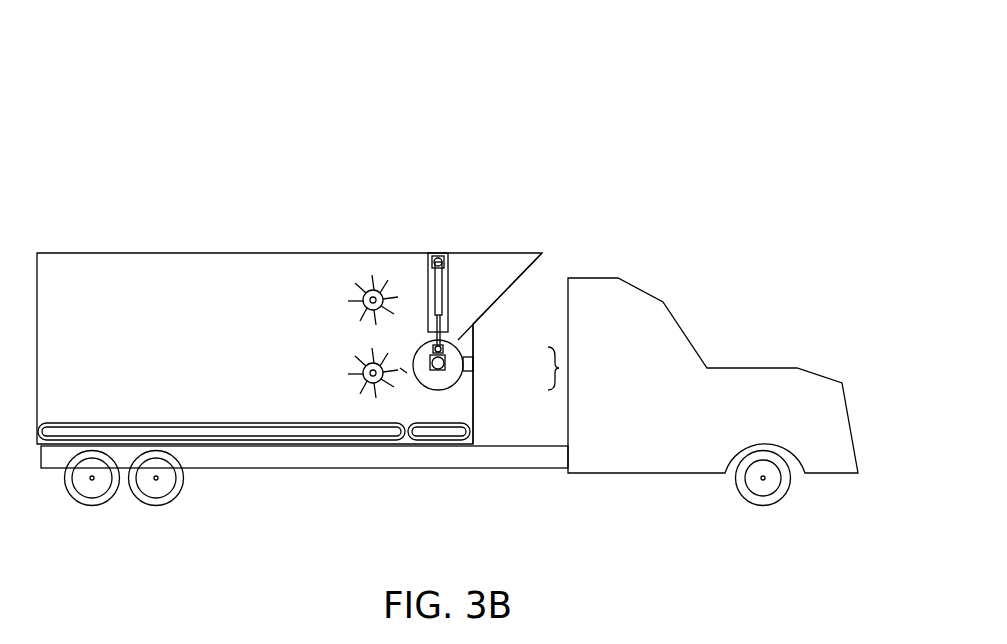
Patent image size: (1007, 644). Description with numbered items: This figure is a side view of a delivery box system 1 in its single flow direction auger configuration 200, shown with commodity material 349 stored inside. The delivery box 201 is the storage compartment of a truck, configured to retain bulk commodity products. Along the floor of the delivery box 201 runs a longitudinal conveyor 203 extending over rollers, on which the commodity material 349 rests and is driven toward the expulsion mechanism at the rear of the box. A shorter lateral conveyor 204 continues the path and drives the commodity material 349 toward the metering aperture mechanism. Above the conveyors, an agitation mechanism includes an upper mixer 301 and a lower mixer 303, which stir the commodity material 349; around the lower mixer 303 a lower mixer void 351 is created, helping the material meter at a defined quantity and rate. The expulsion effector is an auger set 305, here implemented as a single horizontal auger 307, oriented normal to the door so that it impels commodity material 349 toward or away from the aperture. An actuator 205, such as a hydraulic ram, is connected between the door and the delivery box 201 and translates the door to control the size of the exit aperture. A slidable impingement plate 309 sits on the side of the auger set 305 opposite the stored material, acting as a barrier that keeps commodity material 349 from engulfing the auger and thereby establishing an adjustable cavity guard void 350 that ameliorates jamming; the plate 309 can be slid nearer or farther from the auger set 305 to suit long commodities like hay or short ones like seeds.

The delivery box system 1 is at (553, 65).
The single flow direction auger configuration 200 is at (553, 135).
The delivery box 201 is at (508, 253).
The longitudinal conveyor 203 is at (252, 440).
The lateral conveyor 204 is at (448, 440).
The actuator 205 is at (450, 253).
The upper mixer 301 is at (377, 276).
The lower mixer 303 is at (373, 394).
The auger set 305 is at (555, 369).
The single horizontal auger 307 is at (448, 365).
The slidable impingement plate 309 is at (473, 332).
The commodity material 349 is at (120, 275).
The adjustable cavity guard void 350 is at (465, 358).
The lower mixer void 351 is at (407, 373).